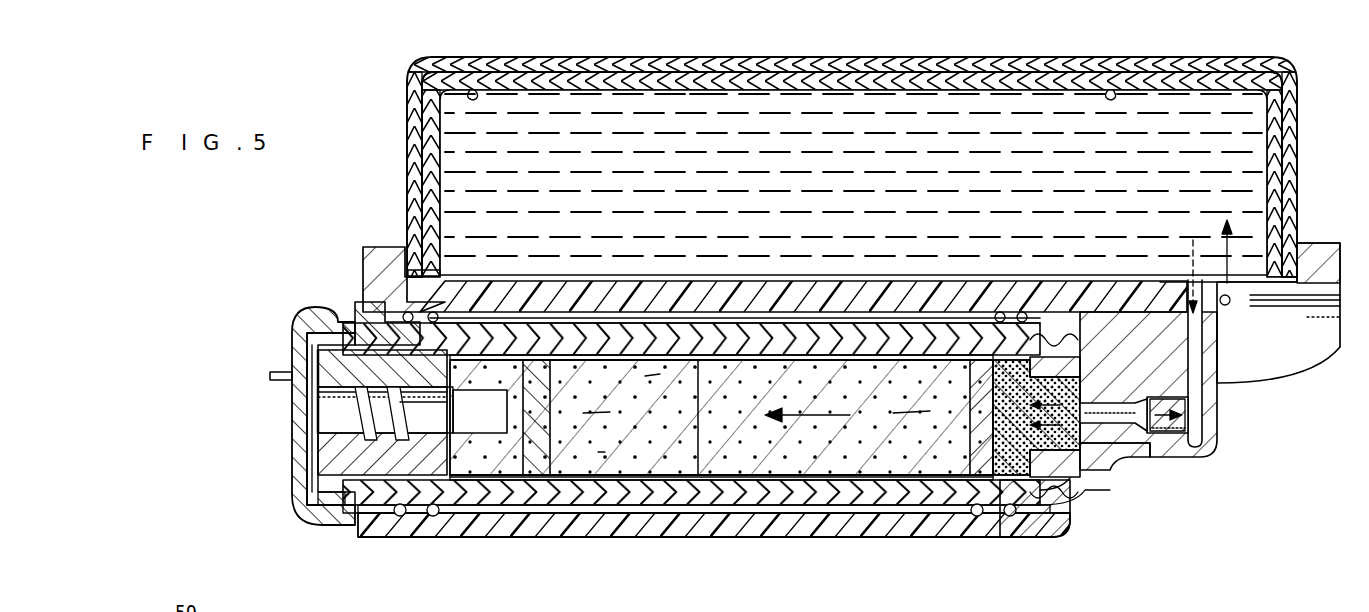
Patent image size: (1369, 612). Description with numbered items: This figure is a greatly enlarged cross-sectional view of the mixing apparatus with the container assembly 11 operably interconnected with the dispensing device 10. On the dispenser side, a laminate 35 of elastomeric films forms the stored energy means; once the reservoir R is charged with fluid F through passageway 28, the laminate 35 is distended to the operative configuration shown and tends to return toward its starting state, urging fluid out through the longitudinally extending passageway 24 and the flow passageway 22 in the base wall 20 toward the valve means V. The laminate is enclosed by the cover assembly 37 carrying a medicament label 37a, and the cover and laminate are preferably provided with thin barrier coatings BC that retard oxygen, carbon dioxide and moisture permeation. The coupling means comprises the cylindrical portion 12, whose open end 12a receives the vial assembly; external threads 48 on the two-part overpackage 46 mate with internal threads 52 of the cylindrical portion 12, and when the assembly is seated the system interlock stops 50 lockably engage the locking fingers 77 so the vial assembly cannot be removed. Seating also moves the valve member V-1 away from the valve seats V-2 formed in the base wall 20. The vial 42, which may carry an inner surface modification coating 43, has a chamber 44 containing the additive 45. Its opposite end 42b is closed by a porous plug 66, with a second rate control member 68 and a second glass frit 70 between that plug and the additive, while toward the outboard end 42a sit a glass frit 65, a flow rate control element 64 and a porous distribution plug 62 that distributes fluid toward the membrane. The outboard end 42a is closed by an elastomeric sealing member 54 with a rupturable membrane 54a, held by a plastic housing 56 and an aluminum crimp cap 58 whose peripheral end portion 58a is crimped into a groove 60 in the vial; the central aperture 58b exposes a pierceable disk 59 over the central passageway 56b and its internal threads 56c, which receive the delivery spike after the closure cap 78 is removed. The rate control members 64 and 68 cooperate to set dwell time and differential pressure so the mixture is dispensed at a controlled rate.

The dispensing device 10 is at (748, 42).
The container assembly 11 is at (498, 512).
The cylindrical portion 12 is at (870, 546).
The open end 12a is at (345, 514).
The base wall 20 is at (1112, 300).
The flow passageway 22 is at (1195, 338).
The longitudinally extending passageway 24 is at (828, 284).
The passageway 28 is at (1232, 303).
The laminate construction 35 is at (918, 64).
The cover assembly 37 is at (398, 68).
The medicament label 37a is at (620, 56).
The vial 42 is at (550, 520).
The outboard end 42a is at (413, 347).
The opposite end 42b is at (1025, 495).
The surface modification coating 43 is at (693, 417).
The chamber 44 is at (799, 401).
The additive 45 is at (817, 455).
The overpackage 46 is at (643, 505).
The external threads 48 is at (1022, 290).
The system interlock stops 50 is at (356, 306).
The internal threads 52 is at (402, 517).
The elastomeric sealing member 54 is at (417, 478).
The rupturable membrane 54a is at (447, 405).
The plastic housing 56 is at (447, 445).
The central passageway 56b is at (325, 403).
The internal threads 56c is at (400, 402).
The aluminum crimp cap 58 is at (302, 478).
The peripheral end portion 58a is at (310, 320).
The central aperture 58b is at (307, 422).
The pierceable disk 59 is at (305, 448).
The groove 60 is at (348, 507).
The porous distribution plug 62 is at (608, 415).
The flow rate control element 64 is at (613, 454).
The glass frit 65 is at (639, 380).
The porous plug 66 is at (898, 415).
The second rate control member 68 is at (929, 417).
The second glass frit 70 is at (973, 417).
The locking fingers 77 is at (363, 282).
The closure cap 78 is at (277, 372).
The barrier coatings BC is at (470, 90).
The fluid F is at (672, 104).
The reservoir R is at (1030, 112).
The valve means V is at (1210, 410).
The valve member V-1 is at (1180, 437).
The valve seats V-2 is at (1138, 390).